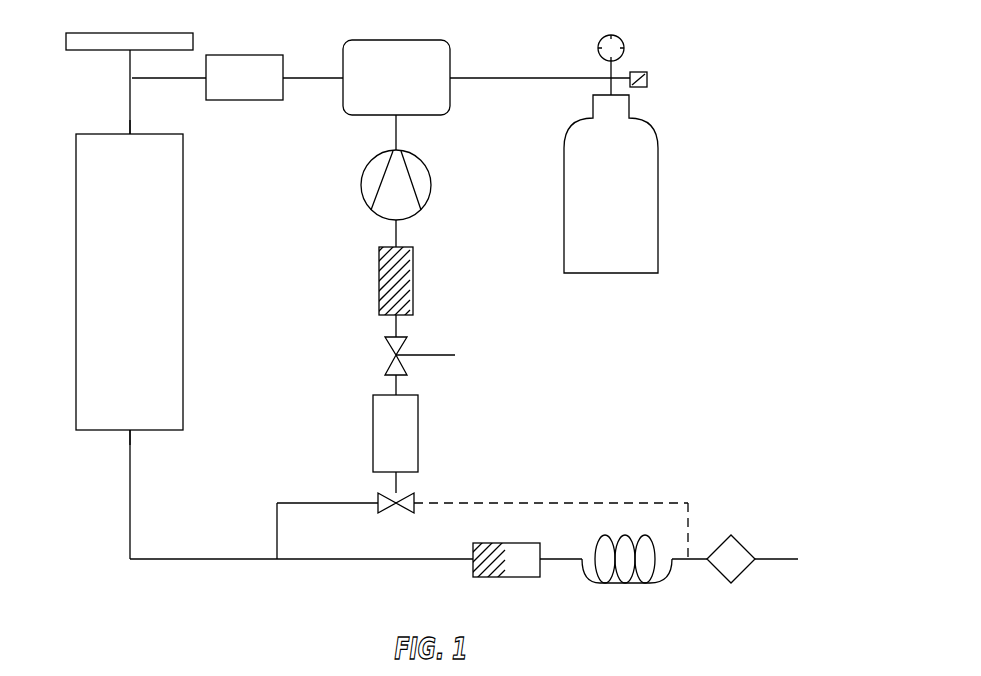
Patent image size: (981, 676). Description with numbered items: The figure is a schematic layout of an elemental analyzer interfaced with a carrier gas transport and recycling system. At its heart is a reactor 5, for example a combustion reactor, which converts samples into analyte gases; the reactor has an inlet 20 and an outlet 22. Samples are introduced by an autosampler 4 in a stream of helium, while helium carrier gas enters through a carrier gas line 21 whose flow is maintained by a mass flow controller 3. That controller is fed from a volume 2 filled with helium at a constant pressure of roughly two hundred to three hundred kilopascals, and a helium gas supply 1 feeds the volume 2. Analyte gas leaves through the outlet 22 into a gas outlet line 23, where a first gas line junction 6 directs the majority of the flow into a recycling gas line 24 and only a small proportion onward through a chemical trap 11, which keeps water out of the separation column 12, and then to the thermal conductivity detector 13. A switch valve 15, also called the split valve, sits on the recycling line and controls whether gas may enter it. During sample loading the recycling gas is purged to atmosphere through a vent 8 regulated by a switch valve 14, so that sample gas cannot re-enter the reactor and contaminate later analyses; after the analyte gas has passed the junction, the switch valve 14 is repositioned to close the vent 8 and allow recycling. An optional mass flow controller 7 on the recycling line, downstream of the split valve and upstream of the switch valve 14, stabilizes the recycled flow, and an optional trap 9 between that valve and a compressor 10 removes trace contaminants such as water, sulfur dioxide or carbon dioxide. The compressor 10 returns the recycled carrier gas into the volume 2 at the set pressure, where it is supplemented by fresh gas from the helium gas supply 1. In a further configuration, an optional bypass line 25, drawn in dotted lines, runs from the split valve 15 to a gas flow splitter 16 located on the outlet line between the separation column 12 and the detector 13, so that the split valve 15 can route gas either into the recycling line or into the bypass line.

The helium gas supply 1 is at (658, 160).
The volume 2 is at (398, 40).
The mass flow controller 3 is at (246, 55).
The autosampler 4 is at (130, 33).
The reactor 5 is at (183, 222).
The first gas line junction 6 is at (277, 560).
The mass flow controller 7 is at (419, 433).
The vent 8 is at (531, 368).
The trap 9 is at (414, 282).
The compressor 10 is at (432, 185).
The chemical trap 11 is at (505, 577).
The separation column 12 is at (635, 580).
The thermal conductivity detector 13 is at (737, 583).
The switch valve 14 is at (393, 355).
The switch valve 15 is at (400, 508).
The gas flow splitter 16 is at (692, 530).
The inlet 20 is at (127, 134).
The carrier gas line 21 is at (317, 78).
The outlet 22 is at (129, 431).
The gas outlet line 23 is at (130, 560).
The recycling gas line 24 is at (328, 501).
The bypass line 25 is at (548, 503).